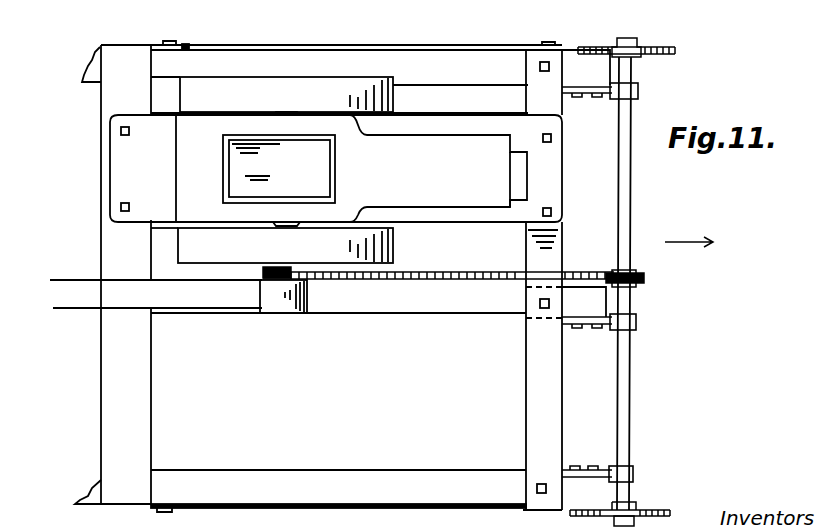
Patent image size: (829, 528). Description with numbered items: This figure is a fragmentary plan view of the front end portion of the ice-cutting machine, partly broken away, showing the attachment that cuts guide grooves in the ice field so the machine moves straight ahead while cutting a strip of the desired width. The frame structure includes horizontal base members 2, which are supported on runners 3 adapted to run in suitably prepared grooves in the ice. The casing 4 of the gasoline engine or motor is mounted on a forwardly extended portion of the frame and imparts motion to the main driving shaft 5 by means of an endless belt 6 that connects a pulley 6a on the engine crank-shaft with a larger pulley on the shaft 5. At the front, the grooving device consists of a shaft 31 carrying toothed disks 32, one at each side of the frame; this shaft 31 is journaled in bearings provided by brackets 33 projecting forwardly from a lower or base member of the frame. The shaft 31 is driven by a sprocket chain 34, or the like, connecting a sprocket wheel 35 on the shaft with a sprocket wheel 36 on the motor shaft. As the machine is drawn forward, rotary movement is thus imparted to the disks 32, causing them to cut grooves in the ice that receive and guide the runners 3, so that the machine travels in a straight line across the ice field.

The horizontal base member 2 is at (94, 56).
The runner 3 is at (433, 50).
The casing of gasoline engine 4 is at (336, 170).
The main driving shaft 5 is at (250, 526).
The endless belt 6 is at (156, 294).
The pulley 6a is at (280, 313).
The shaft 31 is at (630, 400).
The toothed disk 32 is at (658, 48).
The bracket 33 is at (639, 93).
The sprocket chain 34 is at (433, 280).
The sprocket wheel 35 is at (637, 284).
The sprocket wheel 36 is at (268, 274).